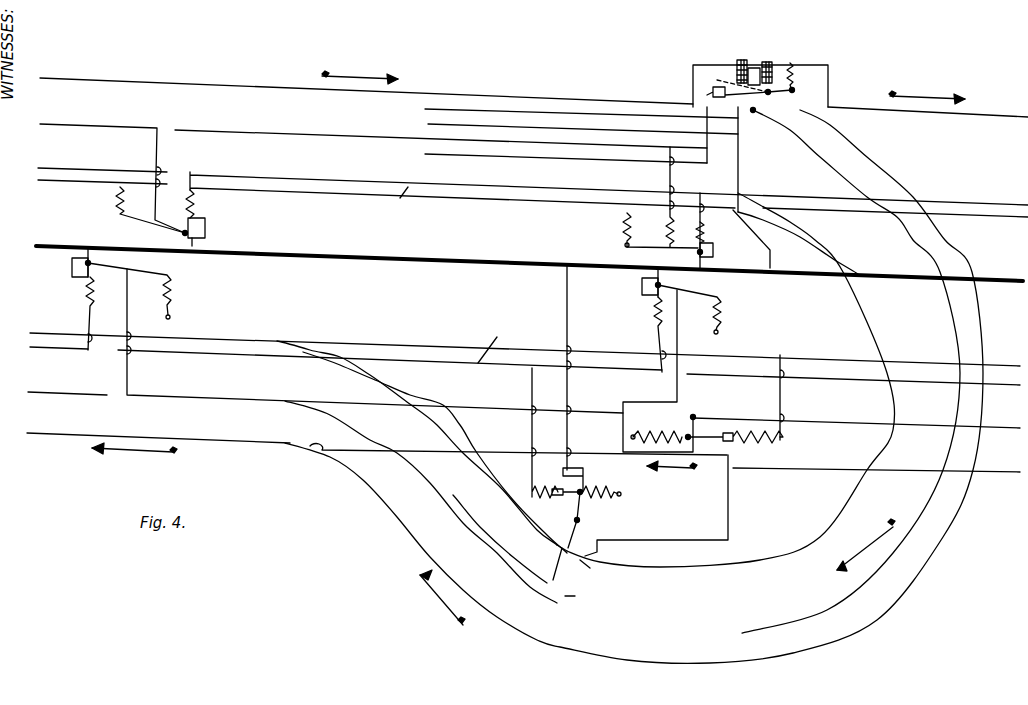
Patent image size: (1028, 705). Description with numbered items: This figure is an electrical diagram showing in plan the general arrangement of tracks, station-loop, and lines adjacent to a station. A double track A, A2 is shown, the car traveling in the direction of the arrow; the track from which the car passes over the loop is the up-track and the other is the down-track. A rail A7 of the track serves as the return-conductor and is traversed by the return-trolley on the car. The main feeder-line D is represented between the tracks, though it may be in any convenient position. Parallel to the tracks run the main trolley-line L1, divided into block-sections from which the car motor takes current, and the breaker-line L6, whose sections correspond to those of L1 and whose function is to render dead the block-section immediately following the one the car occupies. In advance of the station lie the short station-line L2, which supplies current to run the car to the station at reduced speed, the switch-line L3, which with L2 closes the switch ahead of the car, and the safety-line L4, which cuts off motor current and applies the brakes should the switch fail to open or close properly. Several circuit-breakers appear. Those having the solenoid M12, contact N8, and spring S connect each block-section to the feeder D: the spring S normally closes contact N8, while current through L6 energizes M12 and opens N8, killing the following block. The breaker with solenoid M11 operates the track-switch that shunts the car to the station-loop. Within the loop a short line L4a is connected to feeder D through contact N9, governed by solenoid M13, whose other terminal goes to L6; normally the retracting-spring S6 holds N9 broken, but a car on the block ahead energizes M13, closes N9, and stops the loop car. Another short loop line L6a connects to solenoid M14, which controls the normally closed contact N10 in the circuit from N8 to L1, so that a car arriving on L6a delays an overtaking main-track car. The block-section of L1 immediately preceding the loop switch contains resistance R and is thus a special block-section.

The track A is at (534, 93).
The track A2 is at (53, 387).
The return-rail A7 is at (523, 371).
The main feeder-line D is at (529, 265).
The main trolley-line L1 is at (373, 174).
The station-line L2 is at (569, 123).
The switch-line L3 is at (581, 114).
The safety-line L4 is at (573, 285).
The breaker-line L6 is at (514, 276).
The short section of line in the station-loop L4a is at (442, 503).
The short line in the station-loop L6a is at (586, 389).
The solenoid M11 is at (742, 62).
The solenoid M12 is at (390, 281).
The solenoid M13 is at (555, 444).
The solenoid M14 is at (751, 402).
The contact N8 is at (386, 245).
The contact N9 is at (573, 406).
The contact N10 is at (671, 376).
The resistance R is at (660, 197).
The spring S is at (412, 260).
The retracting-spring S6 is at (602, 503).